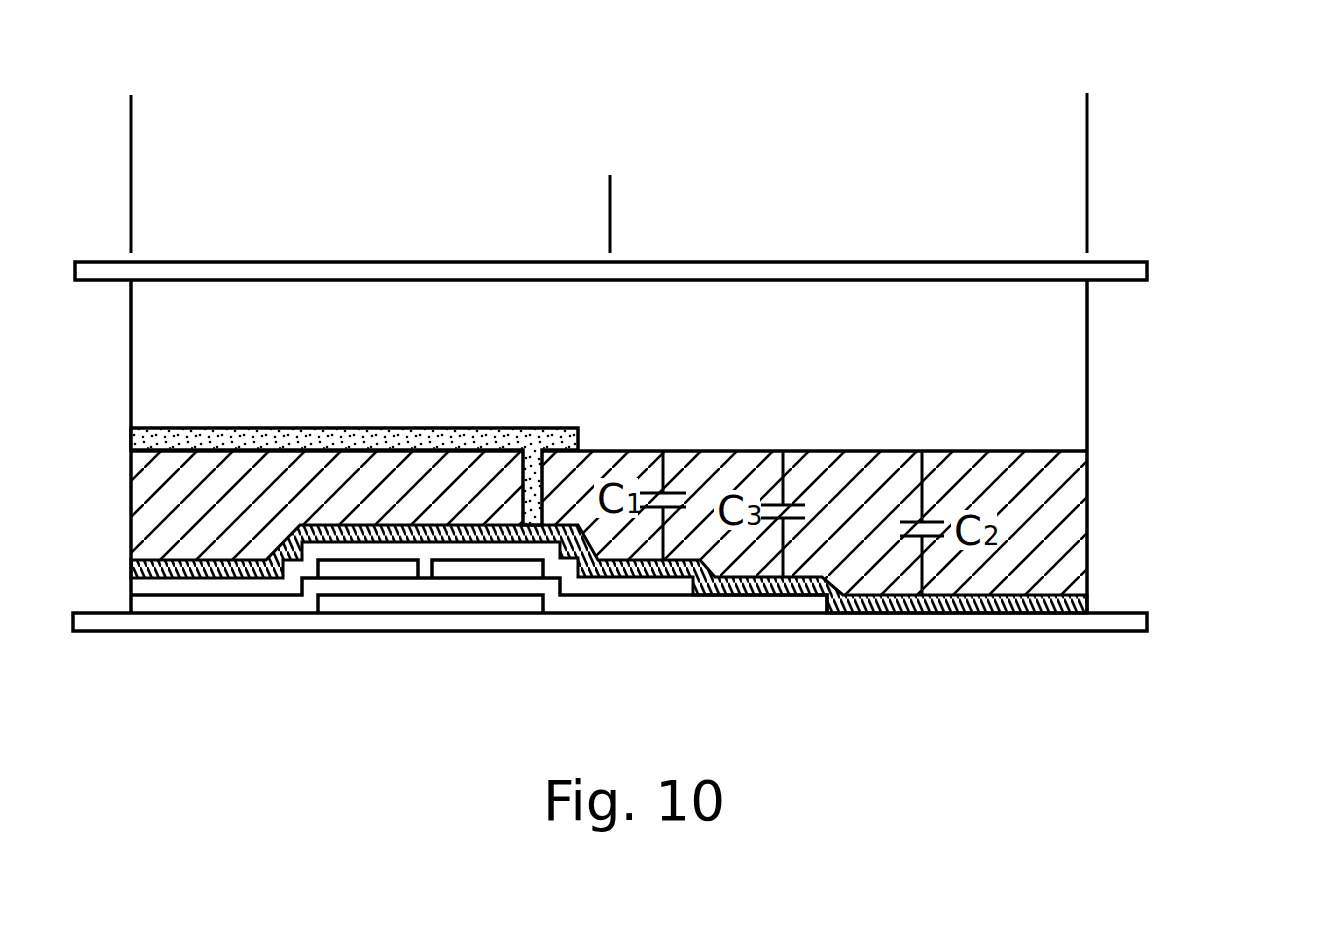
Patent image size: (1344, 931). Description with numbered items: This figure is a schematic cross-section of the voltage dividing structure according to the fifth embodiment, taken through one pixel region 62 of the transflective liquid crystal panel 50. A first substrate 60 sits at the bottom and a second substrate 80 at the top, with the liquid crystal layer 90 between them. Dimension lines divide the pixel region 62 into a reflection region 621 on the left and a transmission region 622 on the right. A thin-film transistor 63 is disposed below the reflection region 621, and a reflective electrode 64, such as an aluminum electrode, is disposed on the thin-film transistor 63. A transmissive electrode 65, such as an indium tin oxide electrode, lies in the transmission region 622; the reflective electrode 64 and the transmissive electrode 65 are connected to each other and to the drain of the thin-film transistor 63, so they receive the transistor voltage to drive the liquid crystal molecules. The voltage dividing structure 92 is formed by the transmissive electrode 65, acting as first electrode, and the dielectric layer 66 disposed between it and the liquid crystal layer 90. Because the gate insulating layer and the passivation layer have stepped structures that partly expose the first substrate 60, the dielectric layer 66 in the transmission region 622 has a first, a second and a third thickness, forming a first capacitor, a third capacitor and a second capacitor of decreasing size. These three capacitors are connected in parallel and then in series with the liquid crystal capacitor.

The transflective liquid crystal panel 50 is at (1155, 150).
The first substrate 60 is at (1147, 622).
The pixel region 62 is at (1087, 117).
The reflection region 621 is at (610, 197).
The transmission region 622 is at (1087, 197).
The thin-film transistor 63 is at (270, 663).
The reflective electrode 64 is at (131, 436).
The transmissive electrode 65 is at (676, 569).
The dielectric layer 66 is at (1088, 507).
The second substrate 80 is at (1148, 270).
The liquid crystal layer 90 is at (1087, 377).
The voltage dividing structure 92 is at (727, 527).